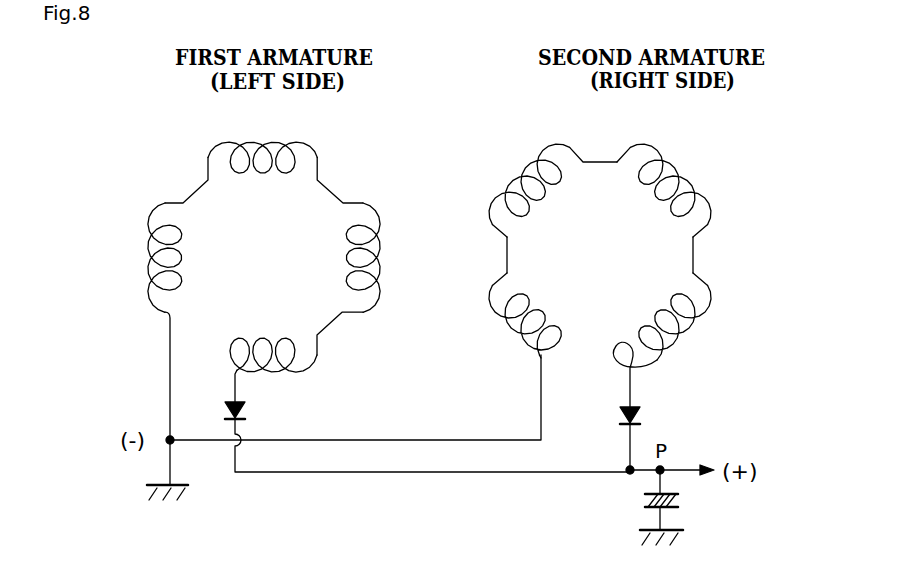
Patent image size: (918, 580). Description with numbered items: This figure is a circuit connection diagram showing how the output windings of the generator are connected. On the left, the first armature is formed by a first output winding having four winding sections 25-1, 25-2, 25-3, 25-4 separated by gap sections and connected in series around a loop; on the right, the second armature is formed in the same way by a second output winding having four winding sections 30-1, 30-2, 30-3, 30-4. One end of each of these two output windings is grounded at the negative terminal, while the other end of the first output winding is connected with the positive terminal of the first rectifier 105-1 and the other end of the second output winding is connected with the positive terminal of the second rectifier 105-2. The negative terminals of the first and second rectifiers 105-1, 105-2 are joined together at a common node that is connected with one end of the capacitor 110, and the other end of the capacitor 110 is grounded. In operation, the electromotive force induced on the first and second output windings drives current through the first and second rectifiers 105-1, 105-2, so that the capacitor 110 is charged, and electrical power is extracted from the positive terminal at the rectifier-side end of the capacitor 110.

The first output winding section 25-1 is at (232, 162).
The first output winding section 25-2 is at (350, 237).
The first output winding section 25-3 is at (297, 350).
The first output winding section 25-4 is at (152, 266).
The second output winding section 30-1 is at (710, 200).
The second output winding section 30-2 is at (700, 322).
The second output winding section 30-3 is at (492, 297).
The second output winding section 30-4 is at (555, 147).
The first rectifier 105-1 is at (246, 412).
The second rectifier 105-2 is at (641, 416).
The capacitor 110 is at (679, 501).